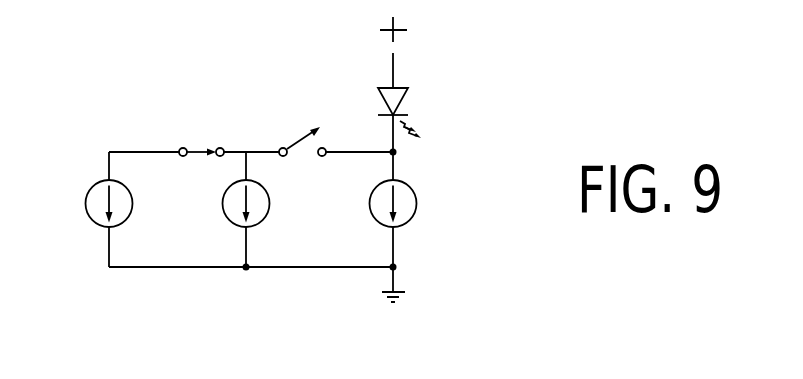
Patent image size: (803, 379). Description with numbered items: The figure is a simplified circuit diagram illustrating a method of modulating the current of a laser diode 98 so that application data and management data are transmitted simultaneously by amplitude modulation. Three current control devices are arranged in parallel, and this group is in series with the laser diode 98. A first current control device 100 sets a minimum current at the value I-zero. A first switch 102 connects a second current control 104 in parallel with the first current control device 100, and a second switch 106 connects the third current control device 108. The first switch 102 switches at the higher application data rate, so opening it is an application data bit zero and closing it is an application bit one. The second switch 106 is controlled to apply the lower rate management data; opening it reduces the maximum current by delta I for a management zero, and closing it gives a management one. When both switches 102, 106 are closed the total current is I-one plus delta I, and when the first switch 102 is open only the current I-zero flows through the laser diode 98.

The laser diode 98 is at (402, 85).
The first current control device 100 is at (370, 204).
The first switch 102 is at (301, 110).
The second current control 104 is at (223, 204).
The second switch 106 is at (200, 110).
The third current control device 108 is at (85, 203).